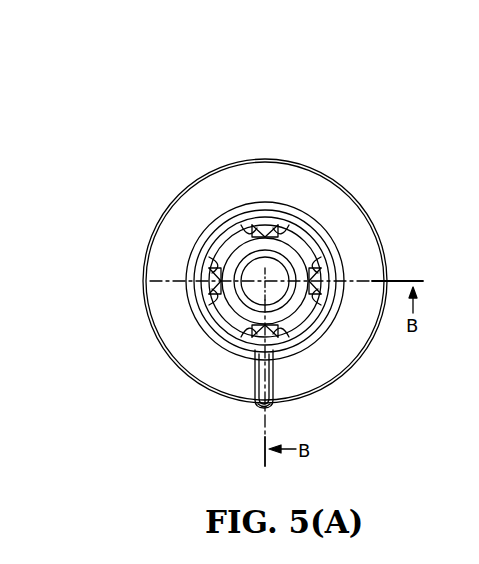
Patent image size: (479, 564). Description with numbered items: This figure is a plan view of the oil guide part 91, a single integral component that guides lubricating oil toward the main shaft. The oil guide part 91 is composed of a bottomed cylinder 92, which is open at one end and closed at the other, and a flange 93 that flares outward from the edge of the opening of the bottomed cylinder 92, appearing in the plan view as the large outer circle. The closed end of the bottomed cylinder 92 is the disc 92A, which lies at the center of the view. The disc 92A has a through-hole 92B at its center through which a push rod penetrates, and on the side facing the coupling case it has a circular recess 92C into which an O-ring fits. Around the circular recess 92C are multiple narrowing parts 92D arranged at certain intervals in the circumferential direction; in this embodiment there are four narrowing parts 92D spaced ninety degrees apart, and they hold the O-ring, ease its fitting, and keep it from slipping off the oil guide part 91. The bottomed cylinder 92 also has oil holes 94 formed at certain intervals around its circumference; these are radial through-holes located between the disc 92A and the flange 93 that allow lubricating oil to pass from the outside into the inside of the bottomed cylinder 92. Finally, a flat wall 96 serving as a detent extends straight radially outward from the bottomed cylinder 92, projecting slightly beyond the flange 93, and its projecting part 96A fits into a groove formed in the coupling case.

The oil guide part 91 is at (99, 131).
The bottomed cylinder 92 is at (310, 222).
The disc 92A is at (222, 225).
The through-hole 92B is at (276, 293).
The circular recess 92C is at (283, 226).
The narrowing parts 92D is at (240, 222).
The flange 93 is at (368, 217).
The oil holes 94 is at (190, 278).
The flat wall 96 is at (256, 381).
The projecting part 96A is at (262, 407).